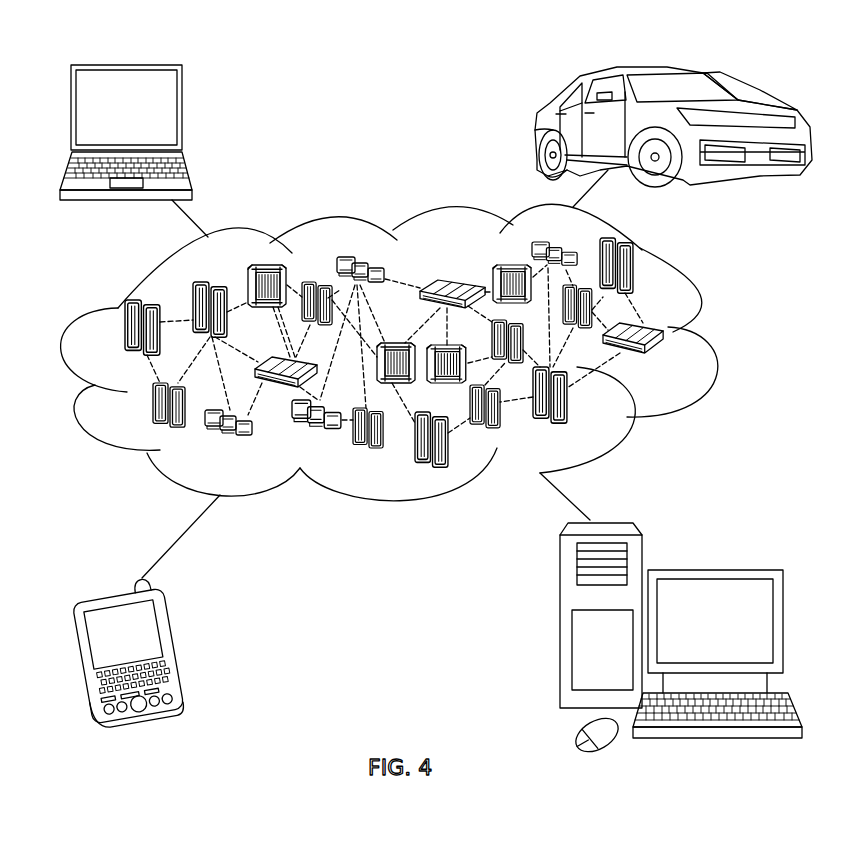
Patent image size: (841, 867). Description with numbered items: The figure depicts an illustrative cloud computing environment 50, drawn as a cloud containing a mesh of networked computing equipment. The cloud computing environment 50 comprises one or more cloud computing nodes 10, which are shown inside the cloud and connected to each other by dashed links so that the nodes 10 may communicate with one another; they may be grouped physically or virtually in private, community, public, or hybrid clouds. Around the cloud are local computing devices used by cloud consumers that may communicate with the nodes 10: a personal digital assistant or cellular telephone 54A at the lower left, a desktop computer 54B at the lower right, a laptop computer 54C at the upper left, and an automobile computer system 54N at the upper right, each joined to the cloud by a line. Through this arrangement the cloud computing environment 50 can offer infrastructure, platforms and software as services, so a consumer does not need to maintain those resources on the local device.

The cloud computing nodes 10 is at (668, 360).
The cloud computing environment 50 is at (717, 337).
The personal digital assistant (PDA) or cellular telephone 54A is at (175, 645).
The desktop computer 54B is at (713, 567).
The laptop computer 54C is at (183, 115).
The automobile computer system 54N is at (538, 128).